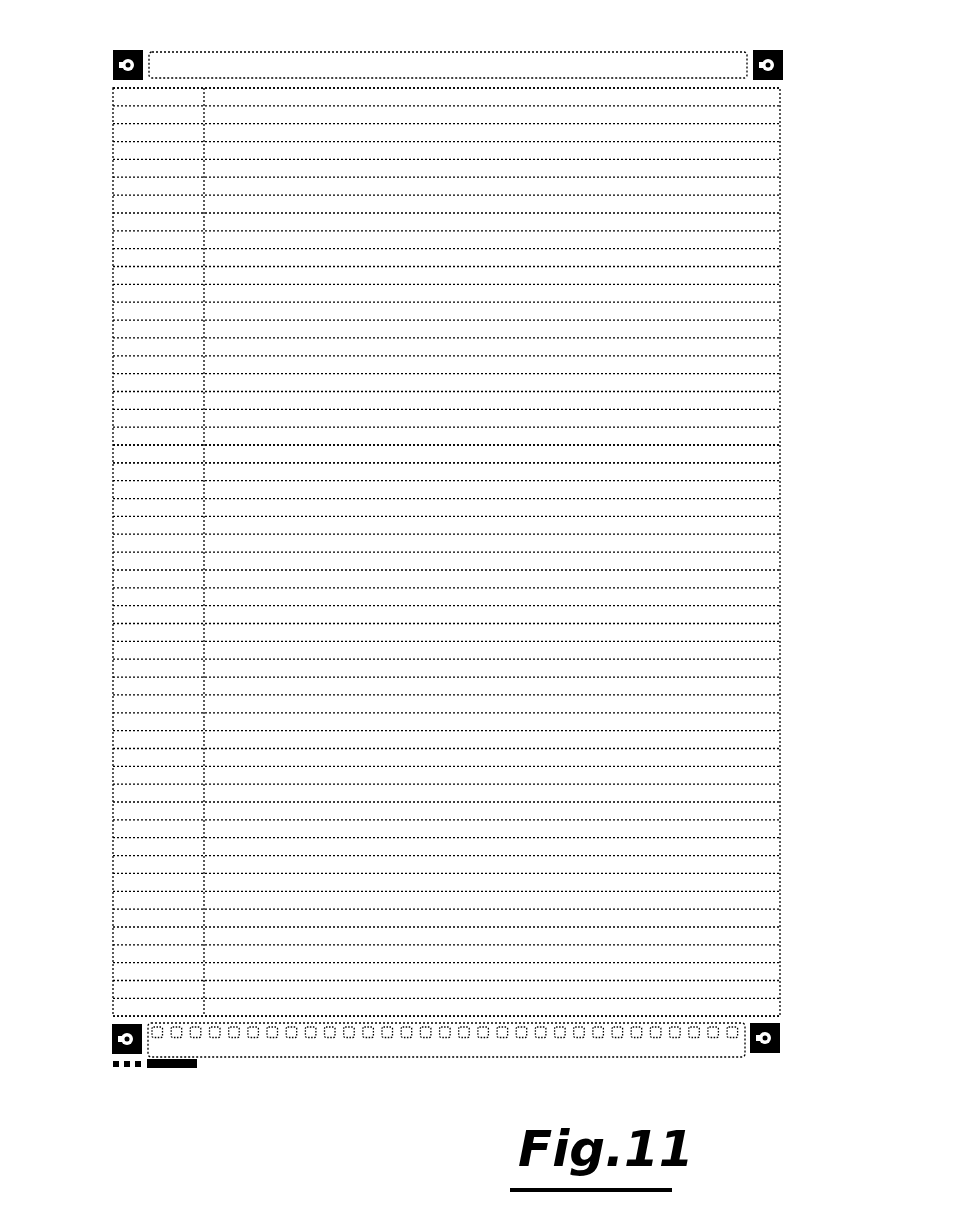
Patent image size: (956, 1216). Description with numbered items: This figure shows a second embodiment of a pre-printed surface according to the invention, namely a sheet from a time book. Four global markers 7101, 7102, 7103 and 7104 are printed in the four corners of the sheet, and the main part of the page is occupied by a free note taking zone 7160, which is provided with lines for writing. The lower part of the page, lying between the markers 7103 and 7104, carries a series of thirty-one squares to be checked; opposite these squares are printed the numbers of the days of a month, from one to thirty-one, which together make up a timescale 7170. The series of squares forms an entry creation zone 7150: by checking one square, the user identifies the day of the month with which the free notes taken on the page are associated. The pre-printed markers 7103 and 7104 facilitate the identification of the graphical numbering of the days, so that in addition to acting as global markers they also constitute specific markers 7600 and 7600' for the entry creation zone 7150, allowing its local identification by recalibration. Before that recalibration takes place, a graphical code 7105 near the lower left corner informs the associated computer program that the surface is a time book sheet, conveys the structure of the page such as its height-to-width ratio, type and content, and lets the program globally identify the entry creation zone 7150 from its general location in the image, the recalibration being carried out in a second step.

The global marker 7101 is at (127, 50).
The global marker 7102 is at (765, 50).
The global marker 7103 is at (763, 1071).
The specific marker 7600 is at (765, 1038).
The global marker 7104 is at (92, 1041).
The specific marker 7600' is at (127, 1039).
The graphical code 7105 is at (125, 1069).
The entry creation zone 7150 is at (448, 1017).
The free note taking zone 7160 is at (228, 455).
The timescale 7170 is at (440, 1059).